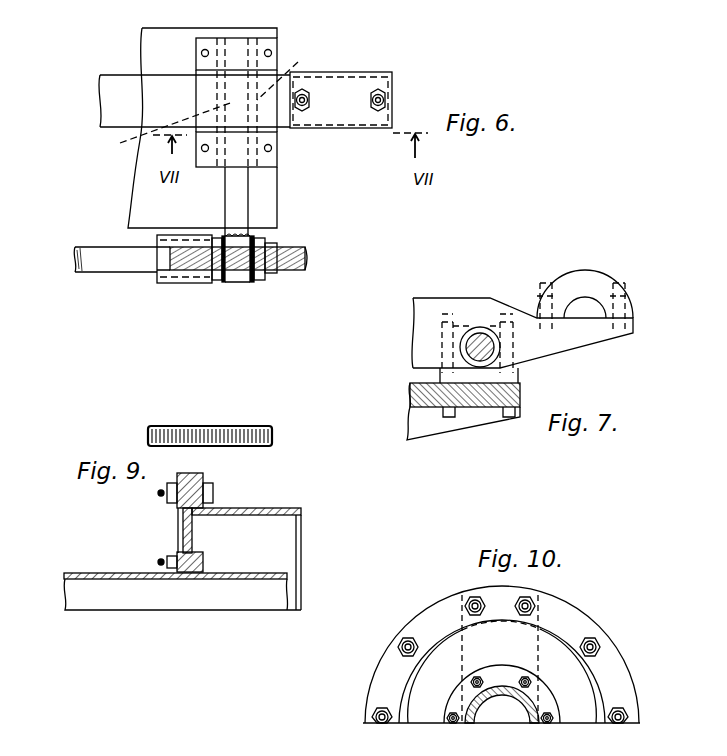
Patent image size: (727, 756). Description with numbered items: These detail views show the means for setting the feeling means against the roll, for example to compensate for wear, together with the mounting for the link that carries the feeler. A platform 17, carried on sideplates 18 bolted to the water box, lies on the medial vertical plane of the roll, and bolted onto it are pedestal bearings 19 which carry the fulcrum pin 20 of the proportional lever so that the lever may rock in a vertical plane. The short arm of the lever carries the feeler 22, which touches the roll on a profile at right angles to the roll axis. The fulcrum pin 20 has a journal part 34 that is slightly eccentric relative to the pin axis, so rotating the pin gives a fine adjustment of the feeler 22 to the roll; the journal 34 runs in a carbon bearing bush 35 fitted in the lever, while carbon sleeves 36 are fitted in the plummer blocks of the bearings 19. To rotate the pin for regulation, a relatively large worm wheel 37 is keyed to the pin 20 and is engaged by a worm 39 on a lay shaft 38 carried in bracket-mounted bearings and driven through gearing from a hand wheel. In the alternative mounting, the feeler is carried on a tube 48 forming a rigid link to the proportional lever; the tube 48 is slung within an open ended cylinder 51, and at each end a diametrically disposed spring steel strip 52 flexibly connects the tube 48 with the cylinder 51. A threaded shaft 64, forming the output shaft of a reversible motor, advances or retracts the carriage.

In FIG. 6, the platform 17 is at (145, 203).
In FIG. 6, the sideplates 18 is at (345, 1).
In FIG. 6, the pedestal bearings 19 is at (200, 57).
In FIG. 7, the pedestal bearings 19 is at (519, 372).
In FIG. 6, the fulcrum pin 20 is at (233, 50).
In FIG. 6, the feeler 22 is at (380, 83).
In FIG. 7, the feeler 22 is at (600, 278).
In FIG. 6, the journal part 34 is at (163, 130).
In FIG. 7, the journal part 34 is at (485, 330).
In FIG. 6, the carbon bearing bush 35 is at (288, 74).
In FIG. 7, the carbon bearing bush 35 is at (470, 328).
In FIG. 6, the carbon sleeves 36 is at (220, 42).
In FIG. 6, the worm wheel 37 is at (305, 257).
In FIG. 6, the lay shaft 38 is at (128, 267).
In FIG. 6, the worm 39 is at (233, 283).
In FIG. 9, the tube 48 is at (95, 573).
In FIG. 10, the tube 48 is at (468, 718).
In FIG. 9, the open ended cylinder 51 is at (281, 508).
In FIG. 10, the open ended cylinder 51 is at (590, 678).
In FIG. 9, the spring steel strip 52 is at (185, 533).
In FIG. 10, the spring steel strip 52 is at (509, 660).
In FIG. 9, the shaft 64 is at (237, 426).